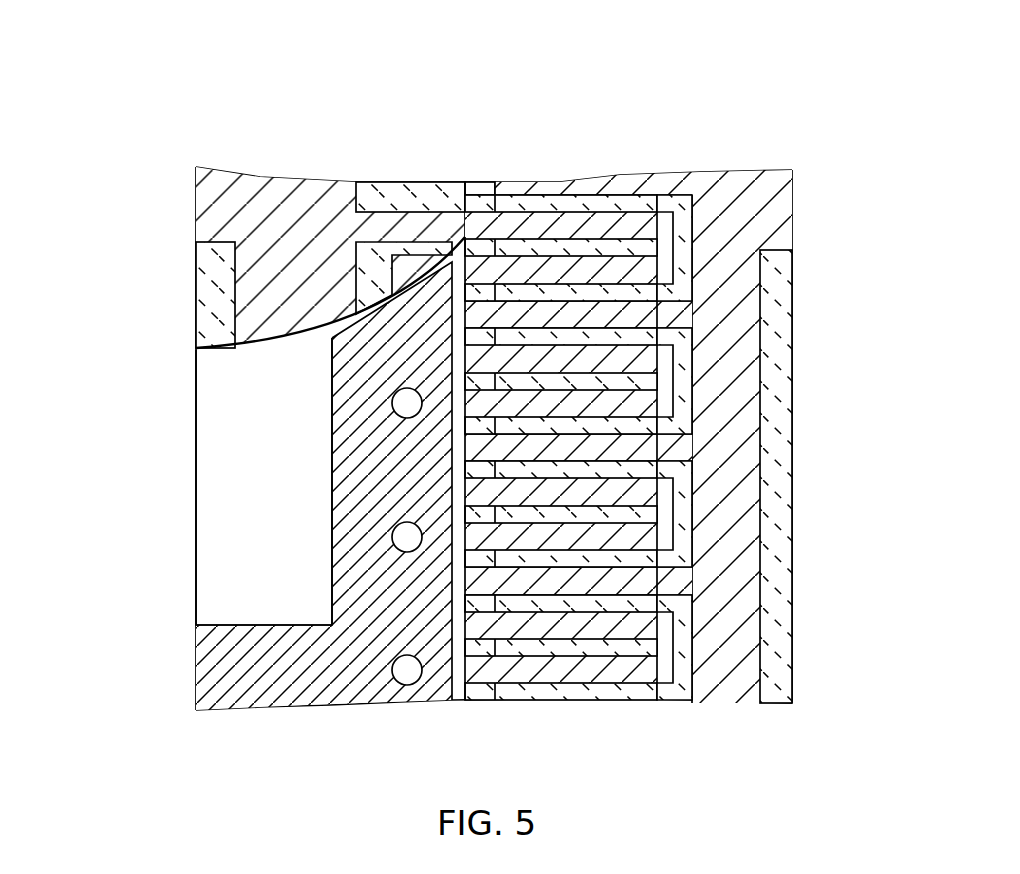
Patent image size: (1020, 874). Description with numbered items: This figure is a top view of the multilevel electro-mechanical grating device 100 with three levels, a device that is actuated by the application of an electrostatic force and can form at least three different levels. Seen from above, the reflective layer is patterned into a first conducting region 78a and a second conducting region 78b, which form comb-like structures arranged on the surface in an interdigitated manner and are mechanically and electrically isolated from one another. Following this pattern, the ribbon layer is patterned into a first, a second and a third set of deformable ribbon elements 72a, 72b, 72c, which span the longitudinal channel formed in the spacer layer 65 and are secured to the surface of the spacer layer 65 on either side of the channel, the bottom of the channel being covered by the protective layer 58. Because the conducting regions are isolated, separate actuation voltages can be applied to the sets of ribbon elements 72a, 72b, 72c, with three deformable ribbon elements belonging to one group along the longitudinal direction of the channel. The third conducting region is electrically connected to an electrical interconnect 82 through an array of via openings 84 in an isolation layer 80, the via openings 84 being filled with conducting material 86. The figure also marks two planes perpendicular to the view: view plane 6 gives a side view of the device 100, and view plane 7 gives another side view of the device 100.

The multilevel electro-mechanical grating device 100 is at (512, 108).
The second conducting region 78b is at (217, 215).
The first conducting region 78a is at (748, 554).
The first set of deformable ribbon elements 72a is at (627, 433).
The second set of deformable ribbon elements 72b is at (577, 483).
The third set of deformable ribbon elements 72c is at (692, 300).
The spacer layer 65 is at (663, 398).
The protective layer 58 is at (530, 692).
The isolation layer 80 is at (217, 505).
The electrical interconnect 82 is at (217, 665).
The via openings 84 is at (412, 687).
The conducting material 86 is at (392, 670).
The view plane 6- 6 is at (240, 405).
The view plane 7- 7 is at (583, 227).